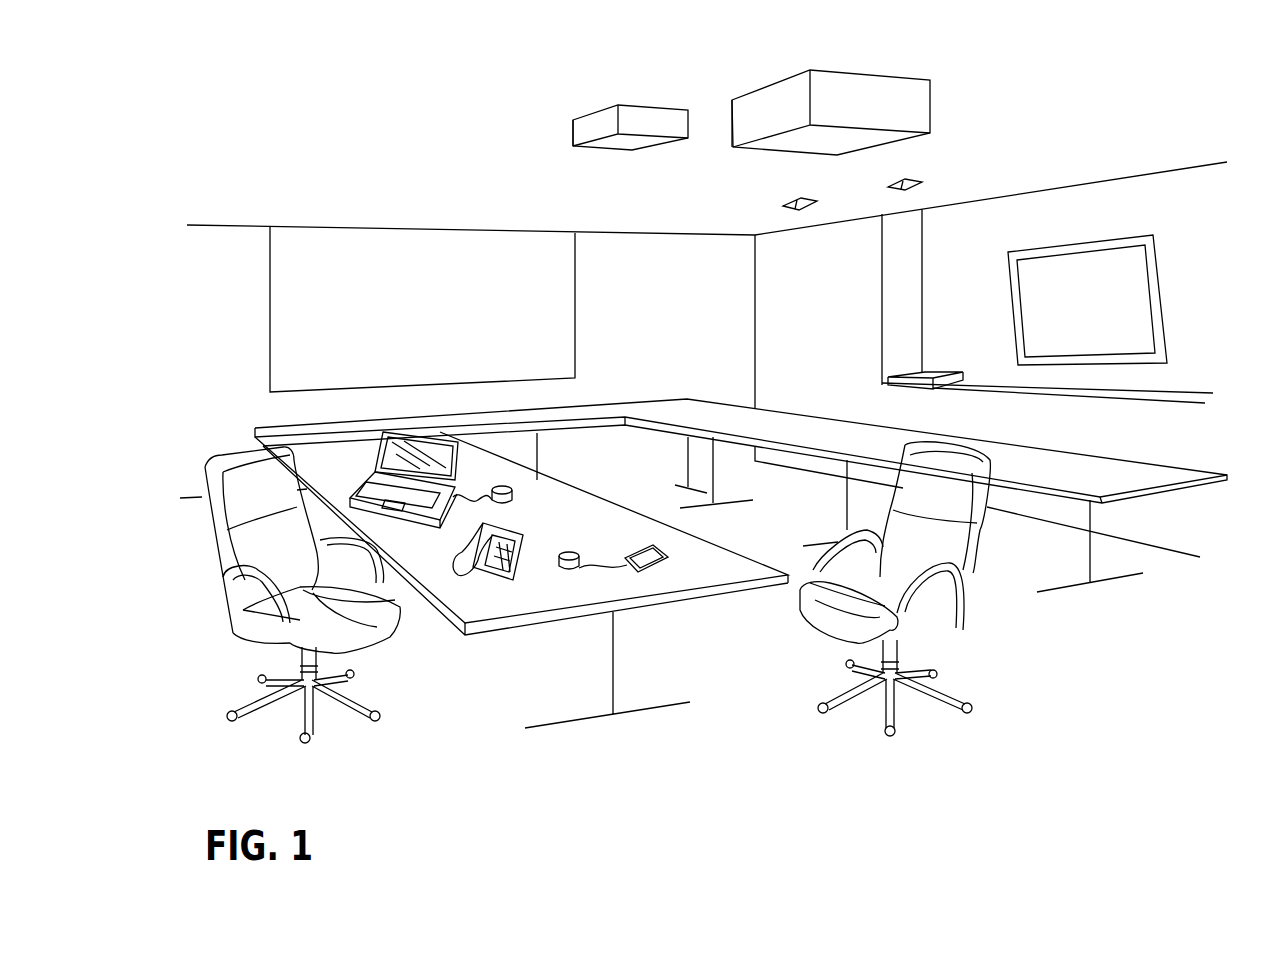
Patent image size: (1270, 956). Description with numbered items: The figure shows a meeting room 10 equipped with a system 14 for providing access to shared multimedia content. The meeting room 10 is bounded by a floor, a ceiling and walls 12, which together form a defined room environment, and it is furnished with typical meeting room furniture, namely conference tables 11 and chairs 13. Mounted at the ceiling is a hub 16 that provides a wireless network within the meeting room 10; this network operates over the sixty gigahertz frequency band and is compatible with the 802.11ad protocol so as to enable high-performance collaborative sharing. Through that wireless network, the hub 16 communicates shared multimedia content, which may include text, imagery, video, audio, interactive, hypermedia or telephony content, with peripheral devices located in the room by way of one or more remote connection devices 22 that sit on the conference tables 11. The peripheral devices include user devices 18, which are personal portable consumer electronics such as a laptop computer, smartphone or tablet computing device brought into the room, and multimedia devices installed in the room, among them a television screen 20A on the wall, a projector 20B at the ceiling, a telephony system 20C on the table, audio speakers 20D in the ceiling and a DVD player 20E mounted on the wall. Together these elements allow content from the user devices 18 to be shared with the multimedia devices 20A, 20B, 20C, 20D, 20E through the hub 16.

The meeting room 10 is at (323, 177).
The conference table 11 is at (587, 412).
The walls 12 is at (637, 262).
The chair 13 is at (948, 542).
The system for providing access to shared multimedia content 14 is at (526, 147).
The hub 16 is at (585, 122).
The user device 18 is at (390, 450).
The television screen 20A is at (1063, 267).
The projector 20B is at (918, 108).
The telephony system 20C is at (520, 532).
The audio speaker 20D is at (807, 197).
The DVD player 20E is at (910, 373).
The remote connection device 22 is at (498, 487).